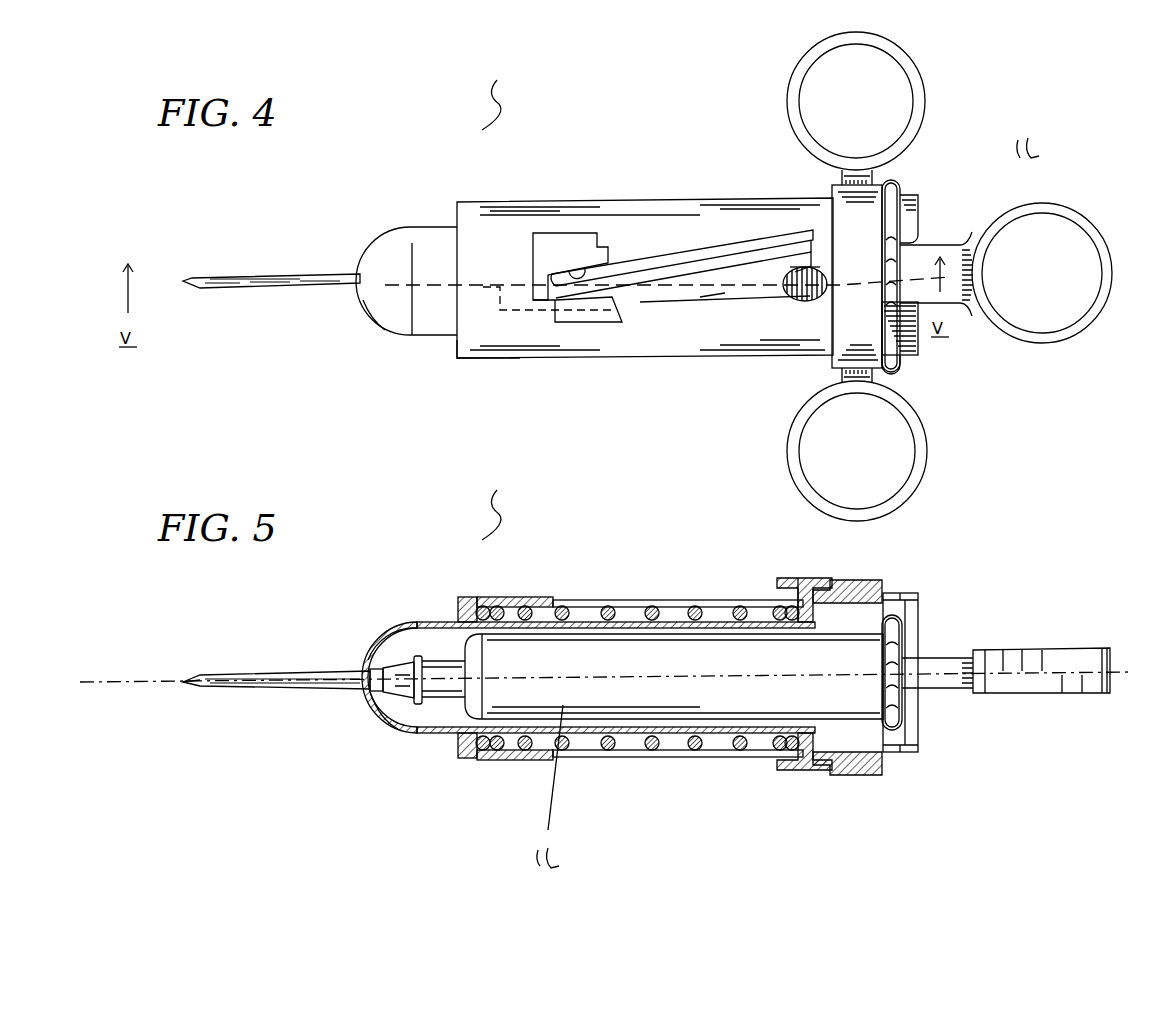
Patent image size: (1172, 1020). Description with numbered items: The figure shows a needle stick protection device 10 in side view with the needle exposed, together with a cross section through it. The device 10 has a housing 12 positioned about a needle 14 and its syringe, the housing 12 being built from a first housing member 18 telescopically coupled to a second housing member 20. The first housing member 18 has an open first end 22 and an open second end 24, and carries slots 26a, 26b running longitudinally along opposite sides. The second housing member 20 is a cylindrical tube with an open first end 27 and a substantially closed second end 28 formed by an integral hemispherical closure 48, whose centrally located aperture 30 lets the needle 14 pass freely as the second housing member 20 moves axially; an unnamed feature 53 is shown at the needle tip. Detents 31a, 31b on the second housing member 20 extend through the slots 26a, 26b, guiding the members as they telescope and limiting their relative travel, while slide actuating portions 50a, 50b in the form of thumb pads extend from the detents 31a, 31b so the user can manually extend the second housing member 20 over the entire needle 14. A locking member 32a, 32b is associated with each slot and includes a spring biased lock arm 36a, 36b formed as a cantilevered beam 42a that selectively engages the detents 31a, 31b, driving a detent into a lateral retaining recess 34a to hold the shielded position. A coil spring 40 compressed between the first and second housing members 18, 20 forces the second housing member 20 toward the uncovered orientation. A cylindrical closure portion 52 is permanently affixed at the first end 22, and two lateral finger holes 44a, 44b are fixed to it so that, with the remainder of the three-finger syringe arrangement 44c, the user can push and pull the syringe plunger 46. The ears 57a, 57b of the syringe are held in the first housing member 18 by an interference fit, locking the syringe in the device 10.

In FIG. 4, the needle stick protection device 10 is at (495, 92).
In FIG. 5, the needle stick protection device 10 is at (495, 502).
In FIG. 4, the housing 12 is at (440, 225).
In FIG. 5, the housing 12 is at (435, 620).
In FIG. 5, the needle 14 is at (265, 675).
In FIG. 4, the first housing member 18 is at (556, 203).
In FIG. 5, the first housing member 18 is at (515, 760).
In FIG. 5, the second housing member 20 is at (423, 733).
In FIG. 4, the open first end 22 is at (832, 345).
In FIG. 5, the open first end 22 is at (900, 754).
In FIG. 4, the open second end 24 is at (455, 352).
In FIG. 5, the open second end 24 is at (470, 758).
In FIG. 4, the slot 26a is at (744, 261).
In FIG. 5, the slot 26a is at (652, 606).
In FIG. 5, the slot 26b is at (655, 754).
In FIG. 5, the open first end 27 is at (800, 577).
In FIG. 4, the substantially closed second end 28 is at (379, 316).
In FIG. 5, the substantially closed second end 28 is at (387, 715).
In FIG. 5, the aperture 30 is at (372, 691).
In FIG. 4, the detent 31a is at (798, 303).
In FIG. 5, the detent 31a is at (824, 583).
In FIG. 5, the detent 31b is at (822, 772).
In FIG. 4, the locking member 32a is at (734, 296).
In FIG. 5, the locking member 32a is at (695, 606).
In FIG. 5, the locking member 32b is at (695, 754).
In FIG. 4, the lateral retaining recess 34a is at (550, 334).
In FIG. 4, the spring biased lock arm 36a is at (702, 303).
In FIG. 5, the spring biased lock arm 36a is at (562, 606).
In FIG. 5, the spring biased lock arm 36b is at (562, 754).
In FIG. 5, the coil spring 40 is at (521, 597).
In FIG. 4, the cantilevered beam 42a is at (667, 247).
In FIG. 5, the cantilevered beam 42a is at (610, 606).
In FIG. 4, the lateral finger hole 44a is at (920, 110).
In FIG. 4, the lateral finger hole 44b is at (920, 458).
In FIG. 4, the three-finger syringe arrangement member 44c is at (1084, 214).
In FIG. 5, the three-finger syringe arrangement member 44c is at (1104, 648).
In FIG. 4, the syringe plunger 46 is at (957, 245).
In FIG. 5, the syringe plunger 46 is at (938, 657).
In FIG. 4, the hemispherical closure 48 is at (368, 262).
In FIG. 5, the hemispherical closure 48 is at (372, 650).
In FIG. 4, the slide actuating portion 50a is at (805, 267).
In FIG. 5, the slide actuating portion 50a is at (783, 578).
In FIG. 5, the slide actuating portion 50b is at (788, 770).
In FIG. 4, the closure portion 52 is at (921, 338).
In FIG. 5, the needle tip 53 is at (185, 687).
In FIG. 4, the ear 57a is at (892, 195).
In FIG. 4, the ear 57b is at (895, 365).